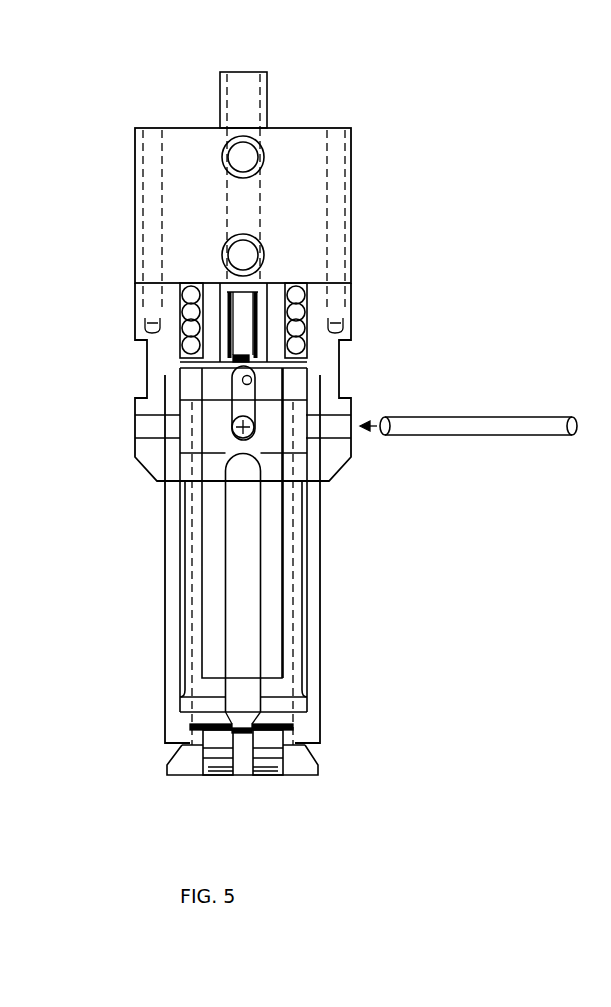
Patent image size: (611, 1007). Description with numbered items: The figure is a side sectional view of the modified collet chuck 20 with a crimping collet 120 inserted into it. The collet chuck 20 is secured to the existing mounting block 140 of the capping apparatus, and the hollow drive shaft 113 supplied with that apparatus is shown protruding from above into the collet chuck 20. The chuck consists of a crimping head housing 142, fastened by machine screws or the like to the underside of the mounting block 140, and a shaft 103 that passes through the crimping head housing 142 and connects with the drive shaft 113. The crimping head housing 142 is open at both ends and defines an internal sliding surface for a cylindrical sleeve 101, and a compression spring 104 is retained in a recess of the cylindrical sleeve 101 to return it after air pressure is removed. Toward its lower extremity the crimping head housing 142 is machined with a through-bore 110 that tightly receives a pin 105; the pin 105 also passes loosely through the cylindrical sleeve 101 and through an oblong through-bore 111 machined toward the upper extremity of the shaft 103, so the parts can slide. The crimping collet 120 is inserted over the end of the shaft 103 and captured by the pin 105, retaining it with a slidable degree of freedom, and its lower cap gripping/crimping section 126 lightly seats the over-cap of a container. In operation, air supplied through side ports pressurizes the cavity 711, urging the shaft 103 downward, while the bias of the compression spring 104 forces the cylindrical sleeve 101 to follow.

The mounting block 140 is at (146, 113).
The drive shaft 113 is at (267, 72).
The crimping head housing 142 is at (355, 298).
The compression spring 104 is at (190, 330).
The cavity 711 is at (270, 320).
The oblong through-bore 111 is at (252, 384).
The through-bore 110 is at (135, 408).
The collet chuck 20 is at (113, 450).
The pin 105 is at (253, 432).
The cylindrical sleeve 101 is at (165, 598).
The shaft 103 is at (282, 527).
The lower cap gripping/crimping section 126 is at (175, 747).
The crimping collet 120 is at (334, 771).